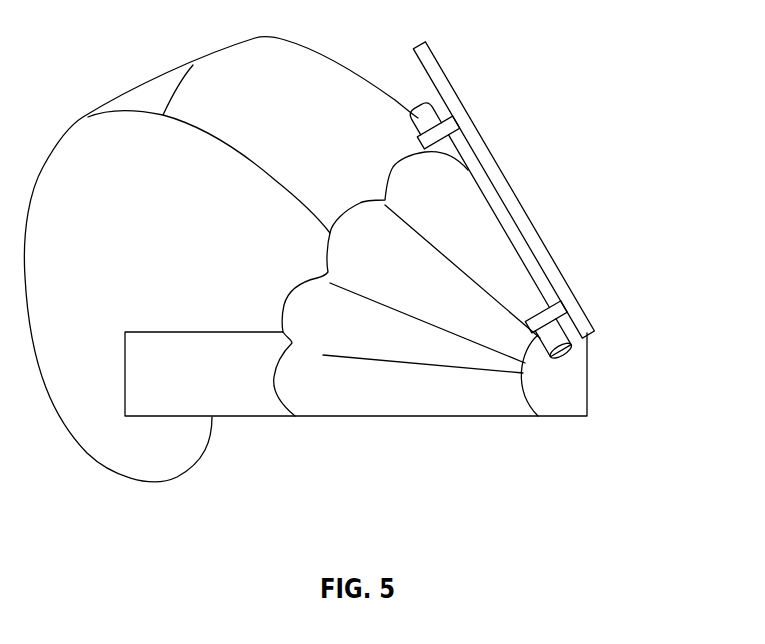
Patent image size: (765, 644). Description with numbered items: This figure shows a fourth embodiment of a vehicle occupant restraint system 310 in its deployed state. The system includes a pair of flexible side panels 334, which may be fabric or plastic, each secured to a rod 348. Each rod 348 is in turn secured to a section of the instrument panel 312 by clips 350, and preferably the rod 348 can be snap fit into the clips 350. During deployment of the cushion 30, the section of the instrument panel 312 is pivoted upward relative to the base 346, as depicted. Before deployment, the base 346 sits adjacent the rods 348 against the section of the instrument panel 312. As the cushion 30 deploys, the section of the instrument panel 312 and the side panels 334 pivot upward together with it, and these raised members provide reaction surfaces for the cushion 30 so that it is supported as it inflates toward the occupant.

The cushion 30 is at (140, 88).
The vehicle occupant restraint system 310 is at (568, 63).
The section of the instrument panel 312 is at (503, 175).
The side panels 334 is at (438, 347).
The base 346 is at (262, 418).
The rod 348 is at (418, 107).
The clips 350 is at (417, 136).